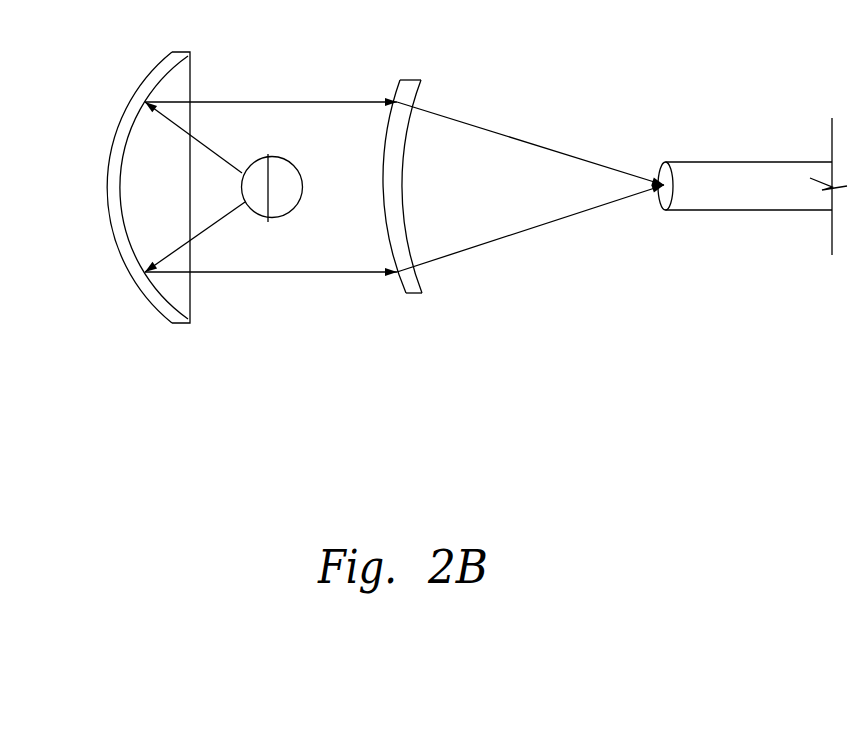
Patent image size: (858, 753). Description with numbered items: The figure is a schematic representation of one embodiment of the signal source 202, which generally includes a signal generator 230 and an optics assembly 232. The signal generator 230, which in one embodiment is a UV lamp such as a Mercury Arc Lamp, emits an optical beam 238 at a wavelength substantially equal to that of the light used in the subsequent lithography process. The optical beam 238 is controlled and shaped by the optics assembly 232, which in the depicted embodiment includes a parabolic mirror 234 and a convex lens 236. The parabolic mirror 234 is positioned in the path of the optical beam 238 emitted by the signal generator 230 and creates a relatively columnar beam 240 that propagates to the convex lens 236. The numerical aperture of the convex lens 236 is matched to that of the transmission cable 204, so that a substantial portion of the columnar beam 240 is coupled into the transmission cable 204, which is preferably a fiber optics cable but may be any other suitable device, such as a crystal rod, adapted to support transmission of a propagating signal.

The signal source 202 is at (465, 52).
The transmission cable 204 is at (733, 159).
The signal generator 230 is at (276, 162).
The optics assembly 232 is at (473, 358).
The parabolic mirror 234 is at (108, 185).
The convex lens 236 is at (402, 185).
The optical beam 238 is at (212, 148).
The columnar beam 240 is at (280, 101).